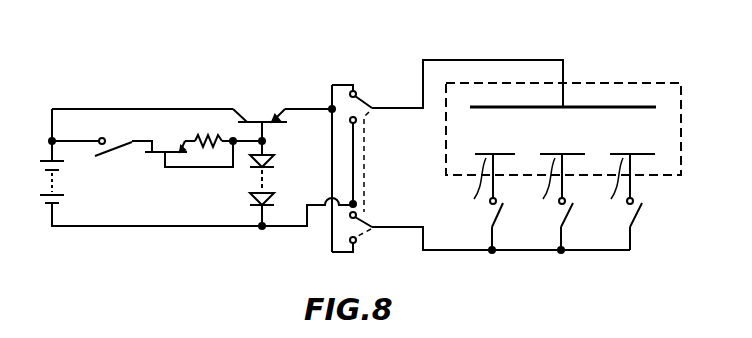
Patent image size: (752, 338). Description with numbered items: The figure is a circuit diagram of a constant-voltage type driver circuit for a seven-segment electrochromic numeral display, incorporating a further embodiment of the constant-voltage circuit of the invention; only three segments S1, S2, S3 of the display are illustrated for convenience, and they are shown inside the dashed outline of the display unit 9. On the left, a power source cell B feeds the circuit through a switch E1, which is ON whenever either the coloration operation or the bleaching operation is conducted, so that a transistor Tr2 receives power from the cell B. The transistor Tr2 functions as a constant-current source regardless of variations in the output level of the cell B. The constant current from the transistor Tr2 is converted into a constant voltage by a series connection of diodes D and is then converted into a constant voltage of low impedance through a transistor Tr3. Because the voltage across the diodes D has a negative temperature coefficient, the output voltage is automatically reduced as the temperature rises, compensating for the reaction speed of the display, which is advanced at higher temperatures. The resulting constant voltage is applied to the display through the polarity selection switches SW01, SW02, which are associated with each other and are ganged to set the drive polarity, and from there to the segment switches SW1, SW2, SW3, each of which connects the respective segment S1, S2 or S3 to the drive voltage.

The heating element / load unit 9 is at (577, 107).
The power source cell B is at (41, 185).
The switch E1 is at (113, 136).
The transistor Tr2 is at (189, 144).
The transistor Tr3 is at (260, 116).
The diodes D is at (271, 183).
The polarity selection switch SW01 is at (383, 150).
The polarity selection switch SW02 is at (380, 234).
The segment S1 is at (485, 193).
The segment S2 is at (558, 187).
The segment S3 is at (626, 186).
The segment switch SW1 is at (513, 226).
The segment switch SW2 is at (584, 226).
The segment switch SW3 is at (652, 226).